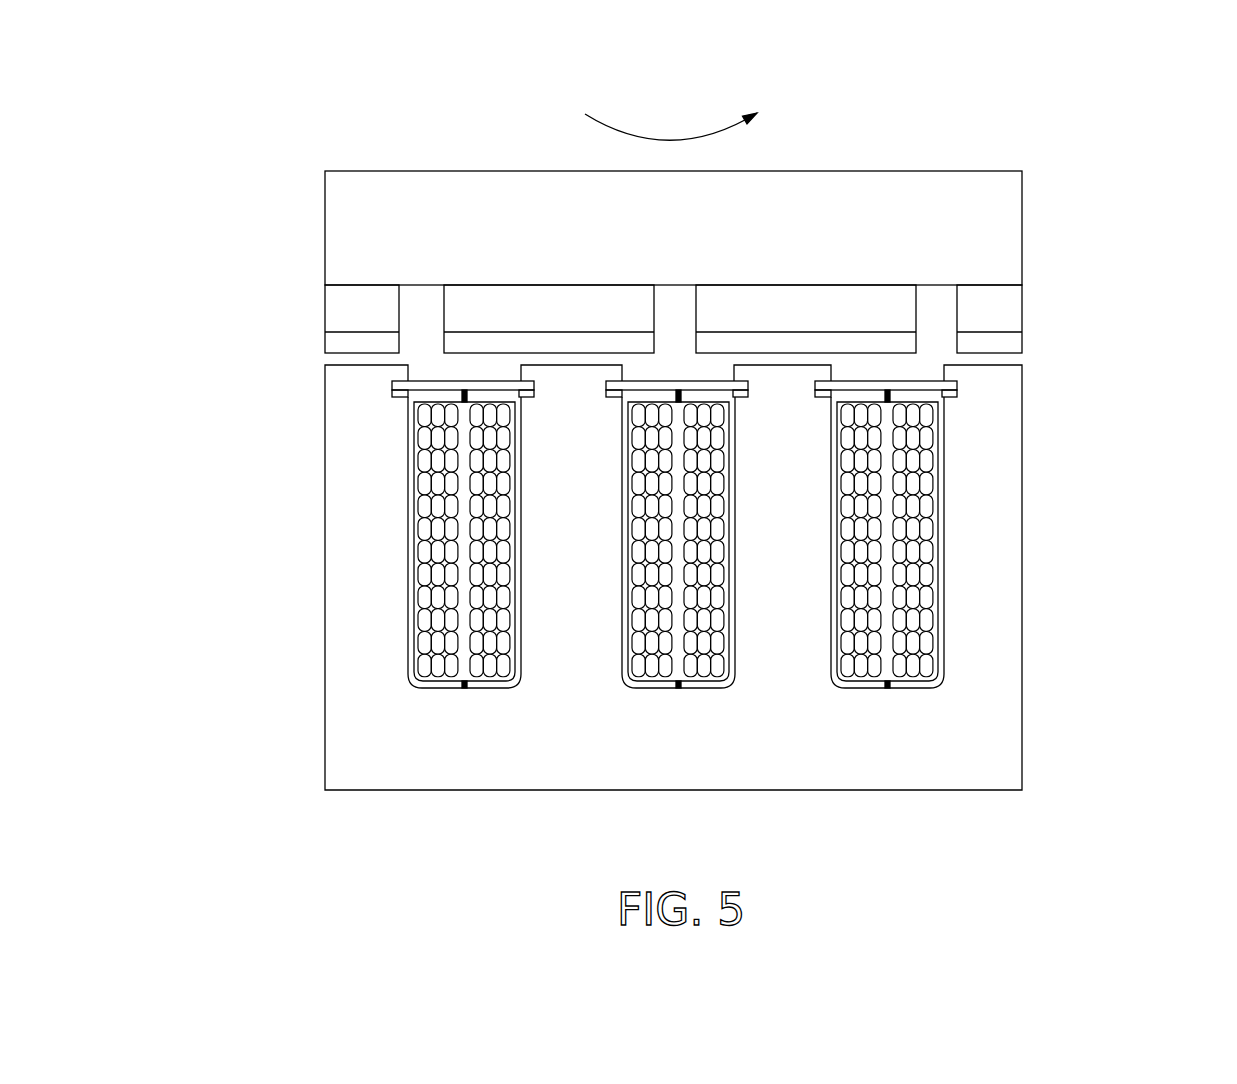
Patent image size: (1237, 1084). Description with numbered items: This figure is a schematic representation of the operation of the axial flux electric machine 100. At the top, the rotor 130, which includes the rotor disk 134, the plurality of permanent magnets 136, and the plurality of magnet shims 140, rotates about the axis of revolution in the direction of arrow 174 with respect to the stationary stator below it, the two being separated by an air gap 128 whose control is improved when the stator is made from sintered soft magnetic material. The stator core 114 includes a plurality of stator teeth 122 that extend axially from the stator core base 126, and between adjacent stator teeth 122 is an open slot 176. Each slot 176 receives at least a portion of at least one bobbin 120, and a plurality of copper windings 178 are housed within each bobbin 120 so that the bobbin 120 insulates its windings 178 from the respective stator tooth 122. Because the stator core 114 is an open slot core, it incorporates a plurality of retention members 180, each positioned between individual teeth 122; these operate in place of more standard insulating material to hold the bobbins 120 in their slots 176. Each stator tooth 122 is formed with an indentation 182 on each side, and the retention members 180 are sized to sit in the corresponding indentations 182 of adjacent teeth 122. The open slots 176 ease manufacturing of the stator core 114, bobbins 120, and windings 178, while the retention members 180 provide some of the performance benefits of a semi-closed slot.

The axial flux electric machine 100 is at (1157, 150).
The stator core 114 is at (360, 718).
The bobbin 120 is at (940, 560).
The stator tooth 122 is at (386, 507).
The stator core base 126 is at (588, 762).
The air gap 128 is at (1030, 354).
The rotor 130 is at (273, 207).
The rotor disk 134 is at (1005, 216).
The permanent magnets 136 is at (311, 298).
The magnet shims 140 is at (311, 342).
The arrow 174 is at (670, 141).
The open slot 176 is at (464, 707).
The copper windings 178 is at (913, 622).
The retention member 180 is at (400, 384).
The indentation 182 is at (607, 397).